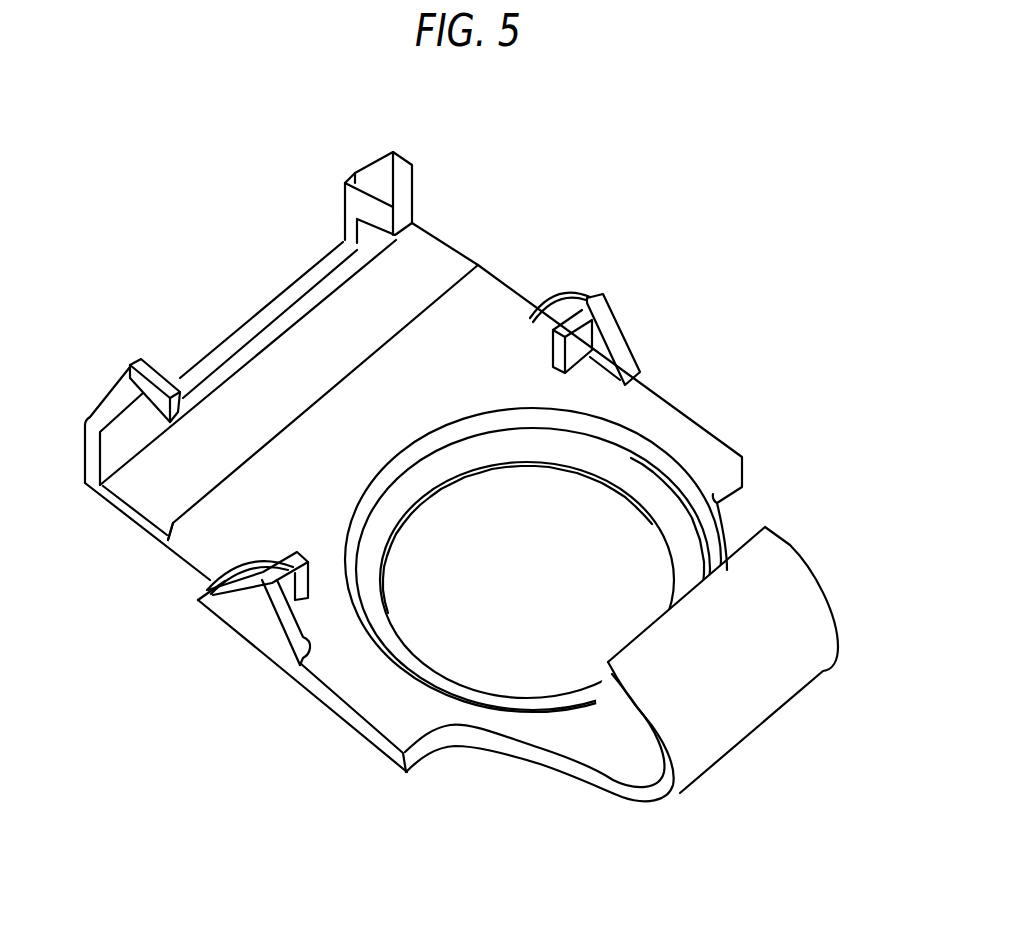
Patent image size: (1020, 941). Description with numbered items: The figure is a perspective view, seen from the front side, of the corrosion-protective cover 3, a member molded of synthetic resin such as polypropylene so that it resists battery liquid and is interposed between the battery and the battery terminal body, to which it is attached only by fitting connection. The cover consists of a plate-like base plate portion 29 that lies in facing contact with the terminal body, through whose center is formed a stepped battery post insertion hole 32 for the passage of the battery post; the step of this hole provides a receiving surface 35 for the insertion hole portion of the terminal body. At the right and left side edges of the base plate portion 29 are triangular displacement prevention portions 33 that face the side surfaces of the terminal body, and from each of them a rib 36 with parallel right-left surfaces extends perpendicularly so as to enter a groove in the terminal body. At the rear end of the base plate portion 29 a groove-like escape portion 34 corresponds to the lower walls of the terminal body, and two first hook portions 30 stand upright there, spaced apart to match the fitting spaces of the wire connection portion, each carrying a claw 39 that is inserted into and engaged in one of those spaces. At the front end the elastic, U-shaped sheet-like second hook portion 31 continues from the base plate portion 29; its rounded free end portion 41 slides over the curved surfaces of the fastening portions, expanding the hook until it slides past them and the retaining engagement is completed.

The corrosion-protective cover 3 is at (716, 368).
The base plate portion 29 is at (477, 310).
The first hook portion 30 is at (382, 168).
The second hook portion 31 is at (800, 597).
The battery post insertion hole 32 is at (613, 503).
The displacement prevention portion 33 is at (615, 317).
The escape portion 34 is at (163, 493).
The receiving surface 35 is at (377, 540).
The rib 36 is at (567, 317).
The claw 39 is at (383, 200).
The free end portion 41 is at (630, 648).